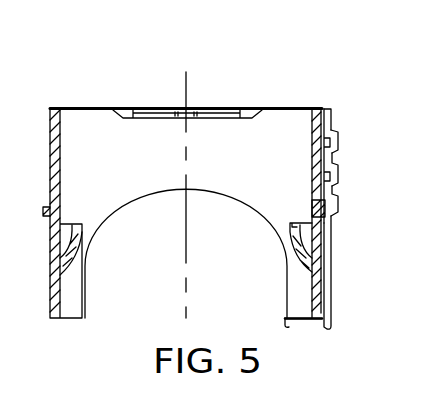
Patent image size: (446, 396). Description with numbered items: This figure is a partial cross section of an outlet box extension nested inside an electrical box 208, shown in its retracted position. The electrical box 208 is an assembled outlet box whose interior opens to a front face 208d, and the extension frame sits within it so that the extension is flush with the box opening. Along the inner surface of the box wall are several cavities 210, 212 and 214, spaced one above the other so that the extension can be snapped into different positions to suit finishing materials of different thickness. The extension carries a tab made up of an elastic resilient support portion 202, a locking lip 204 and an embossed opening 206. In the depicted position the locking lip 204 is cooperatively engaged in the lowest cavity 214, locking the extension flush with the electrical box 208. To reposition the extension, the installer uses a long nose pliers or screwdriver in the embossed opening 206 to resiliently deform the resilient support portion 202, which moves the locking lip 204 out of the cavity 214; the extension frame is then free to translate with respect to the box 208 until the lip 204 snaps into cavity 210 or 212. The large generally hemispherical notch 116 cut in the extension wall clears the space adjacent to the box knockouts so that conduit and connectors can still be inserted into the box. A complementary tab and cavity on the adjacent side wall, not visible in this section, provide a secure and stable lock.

The hemispherical notch 116 is at (143, 203).
The resilient support portion 202 is at (331, 248).
The locking lip 204 is at (317, 207).
The embossed opening 206 is at (302, 222).
The electrical box 208 is at (331, 117).
The front face 208d is at (322, 108).
The cavity 210 is at (325, 143).
The cavity 212 is at (325, 177).
The cavity 214 is at (337, 207).